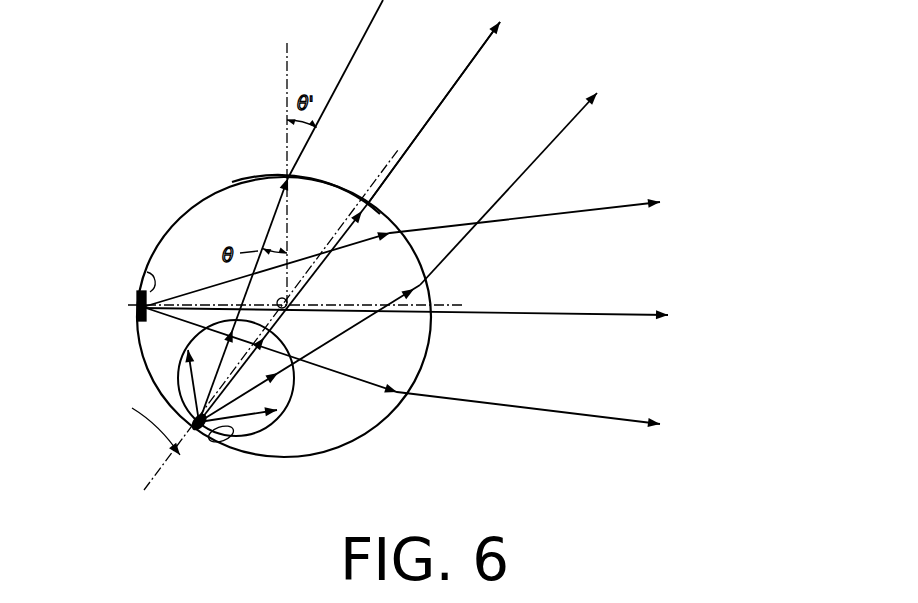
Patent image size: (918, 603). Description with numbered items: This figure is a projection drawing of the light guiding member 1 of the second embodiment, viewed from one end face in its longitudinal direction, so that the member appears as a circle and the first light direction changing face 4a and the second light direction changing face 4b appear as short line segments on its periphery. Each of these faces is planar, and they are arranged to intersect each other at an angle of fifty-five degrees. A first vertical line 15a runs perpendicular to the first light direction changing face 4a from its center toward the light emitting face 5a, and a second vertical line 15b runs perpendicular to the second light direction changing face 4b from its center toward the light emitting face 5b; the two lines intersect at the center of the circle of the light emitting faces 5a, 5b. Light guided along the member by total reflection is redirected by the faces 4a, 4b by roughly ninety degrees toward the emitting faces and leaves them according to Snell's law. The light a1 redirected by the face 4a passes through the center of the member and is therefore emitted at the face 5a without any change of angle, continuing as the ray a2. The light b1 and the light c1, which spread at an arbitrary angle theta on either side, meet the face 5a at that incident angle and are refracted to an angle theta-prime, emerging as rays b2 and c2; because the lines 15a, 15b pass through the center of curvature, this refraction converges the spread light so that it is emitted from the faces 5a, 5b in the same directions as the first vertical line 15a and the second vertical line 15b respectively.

The light guiding member 1 is at (403, 431).
The first light direction changing face 4a is at (224, 443).
The second light direction changing face 4b is at (137, 283).
The light emitting face 5a is at (352, 192).
The light emitting face 5b is at (430, 335).
The first vertical line 15a is at (476, 60).
The second vertical line 15b is at (608, 318).
The light a1 is at (340, 233).
The ray a2 is at (458, 78).
The light b1 is at (270, 222).
The ray b2 is at (366, 28).
The light c1 is at (396, 295).
The ray c2 is at (553, 141).